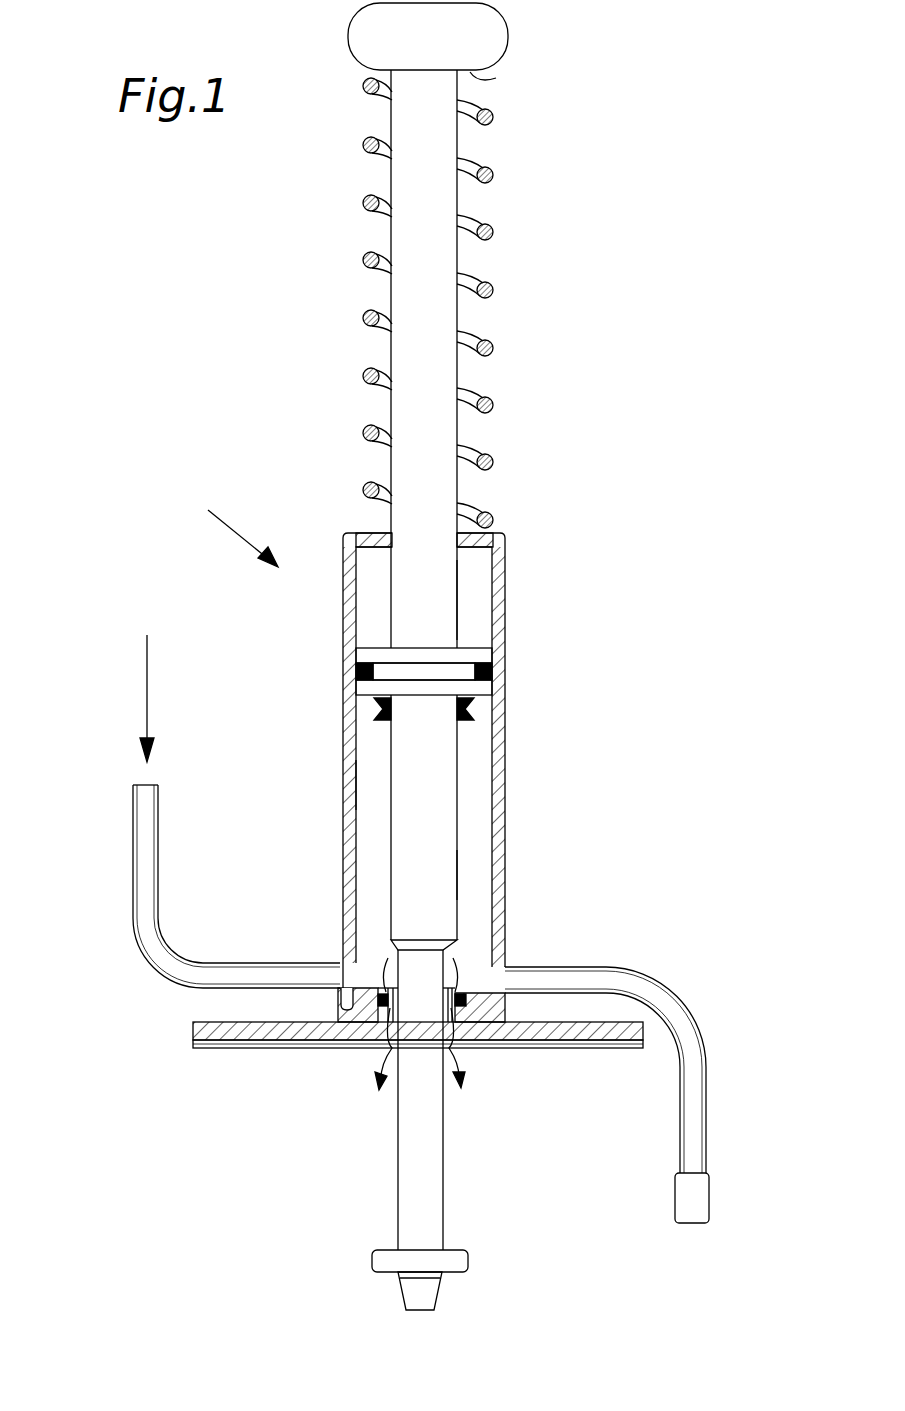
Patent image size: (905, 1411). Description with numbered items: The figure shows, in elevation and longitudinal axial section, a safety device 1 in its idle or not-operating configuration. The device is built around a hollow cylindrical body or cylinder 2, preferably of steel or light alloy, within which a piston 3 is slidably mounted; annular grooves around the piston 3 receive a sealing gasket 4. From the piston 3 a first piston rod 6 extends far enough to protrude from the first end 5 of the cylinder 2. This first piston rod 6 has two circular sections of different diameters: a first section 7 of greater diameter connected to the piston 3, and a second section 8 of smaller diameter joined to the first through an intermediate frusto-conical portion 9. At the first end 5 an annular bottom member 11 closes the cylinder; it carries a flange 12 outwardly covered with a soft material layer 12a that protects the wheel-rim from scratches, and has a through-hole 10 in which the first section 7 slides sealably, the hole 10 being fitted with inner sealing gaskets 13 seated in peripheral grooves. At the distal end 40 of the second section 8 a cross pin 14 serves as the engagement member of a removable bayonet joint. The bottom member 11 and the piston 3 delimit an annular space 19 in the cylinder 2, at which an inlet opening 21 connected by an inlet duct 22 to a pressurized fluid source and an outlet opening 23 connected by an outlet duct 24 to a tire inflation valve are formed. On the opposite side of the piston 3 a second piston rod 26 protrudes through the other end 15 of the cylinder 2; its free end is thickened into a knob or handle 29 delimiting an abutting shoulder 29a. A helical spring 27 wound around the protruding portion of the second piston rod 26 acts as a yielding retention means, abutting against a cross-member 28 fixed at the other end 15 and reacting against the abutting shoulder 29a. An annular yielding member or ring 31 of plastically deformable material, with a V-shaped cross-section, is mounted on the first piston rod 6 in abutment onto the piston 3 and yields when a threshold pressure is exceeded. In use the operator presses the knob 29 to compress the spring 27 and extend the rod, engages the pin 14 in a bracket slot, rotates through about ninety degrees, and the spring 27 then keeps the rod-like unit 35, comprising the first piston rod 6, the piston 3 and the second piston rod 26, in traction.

The safety device 1 is at (209, 622).
The hollow cylindrical body or cylinder 2 is at (345, 712).
The piston 3 is at (372, 648).
The sealing gasket 4 is at (500, 657).
The first end of cylinder 5 is at (340, 998).
The first piston rod 6 is at (468, 882).
The first section of piston rod 7 is at (457, 815).
The second section of piston rod 8 is at (405, 1130).
The intermediate frusto-conical portion 9 is at (472, 948).
The through-hole 10 is at (385, 1050).
The annular bottom member 11 is at (480, 1040).
The flange 12 is at (195, 1030).
The soft material layer 12a is at (232, 1049).
The inner sealing gasket 13 is at (470, 1000).
The cross pin 14 is at (466, 1252).
The other end of cylinder 15 is at (505, 552).
The annular space 19 is at (368, 784).
The inlet opening 21 is at (346, 968).
The inlet duct 22 is at (160, 871).
The outlet opening 23 is at (508, 972).
The outlet duct 24 is at (706, 1076).
The second piston rod 26 is at (405, 349).
The helical spring 27 is at (490, 236).
The cross-member 28 is at (378, 540).
The knob or handle 29 is at (505, 25).
The abutting shoulder 29a is at (518, 81).
The annular yielding member (ring) 31 is at (478, 712).
The rod-like unit 35 is at (470, 608).
The distal end of piston rod 40 is at (400, 1285).